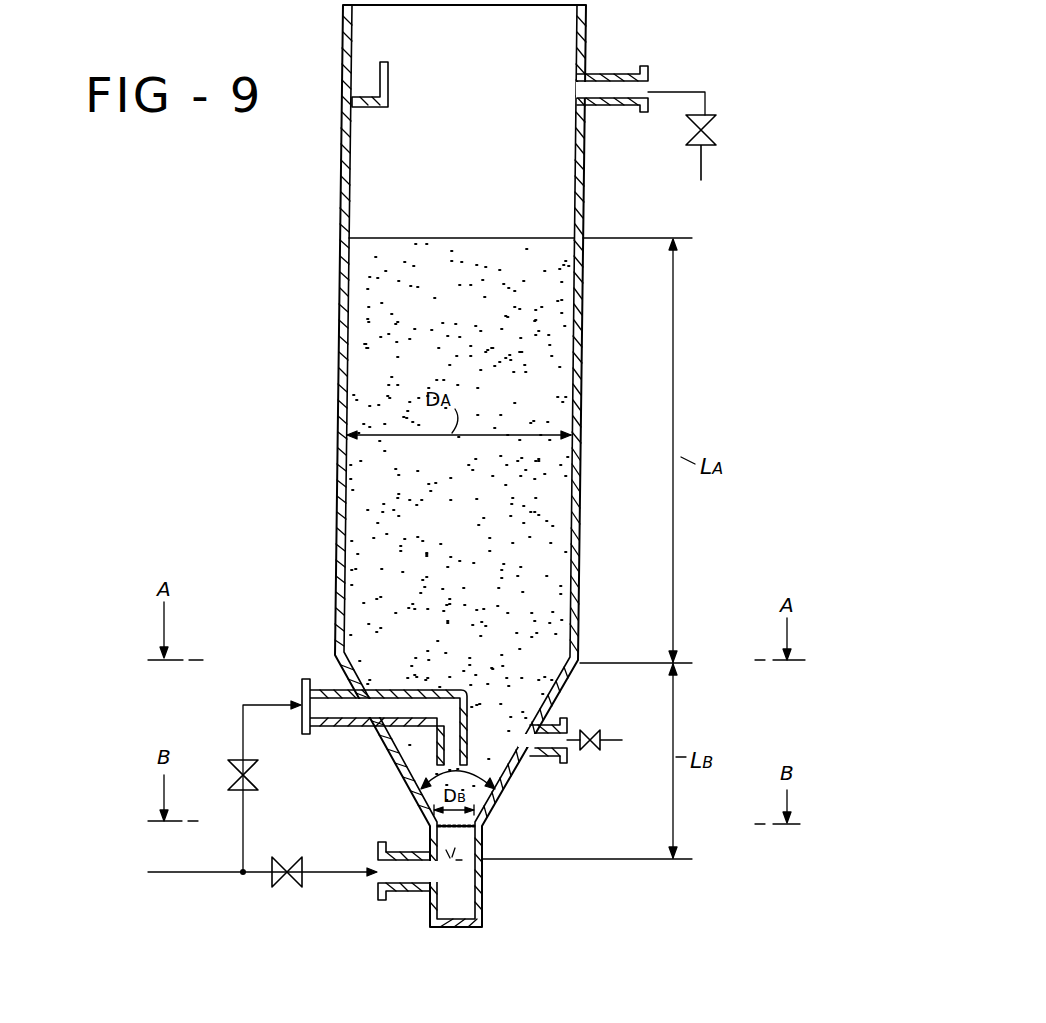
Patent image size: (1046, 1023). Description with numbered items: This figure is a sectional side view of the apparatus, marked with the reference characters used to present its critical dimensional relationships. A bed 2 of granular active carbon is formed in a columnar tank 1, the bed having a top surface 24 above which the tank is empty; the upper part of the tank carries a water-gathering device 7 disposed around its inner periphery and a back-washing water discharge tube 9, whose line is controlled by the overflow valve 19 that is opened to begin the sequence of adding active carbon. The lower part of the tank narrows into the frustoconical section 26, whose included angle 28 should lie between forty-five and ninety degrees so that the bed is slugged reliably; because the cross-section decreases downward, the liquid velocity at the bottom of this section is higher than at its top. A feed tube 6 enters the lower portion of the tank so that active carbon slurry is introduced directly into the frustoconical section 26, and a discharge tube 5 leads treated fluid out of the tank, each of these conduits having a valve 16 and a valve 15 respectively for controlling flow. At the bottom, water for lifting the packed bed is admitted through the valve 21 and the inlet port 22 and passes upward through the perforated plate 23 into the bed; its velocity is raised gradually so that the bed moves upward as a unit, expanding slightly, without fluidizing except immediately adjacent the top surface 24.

The tank 1 is at (583, 292).
The bed 2 is at (558, 355).
The discharge tube 5 is at (560, 722).
The feed tube 6 is at (405, 690).
The water-gathering device 7 is at (389, 79).
The back-washing water discharge tube 9 is at (612, 74).
The valve 15 is at (590, 752).
The valve 16 is at (255, 779).
The overflow valve 19 is at (689, 135).
The valve 21 is at (296, 861).
The inlet port 22 is at (405, 893).
The perforated plate 23 is at (483, 826).
The top surface 24 is at (434, 235).
The frustoconical section 26 is at (408, 793).
The angle 28 is at (430, 781).